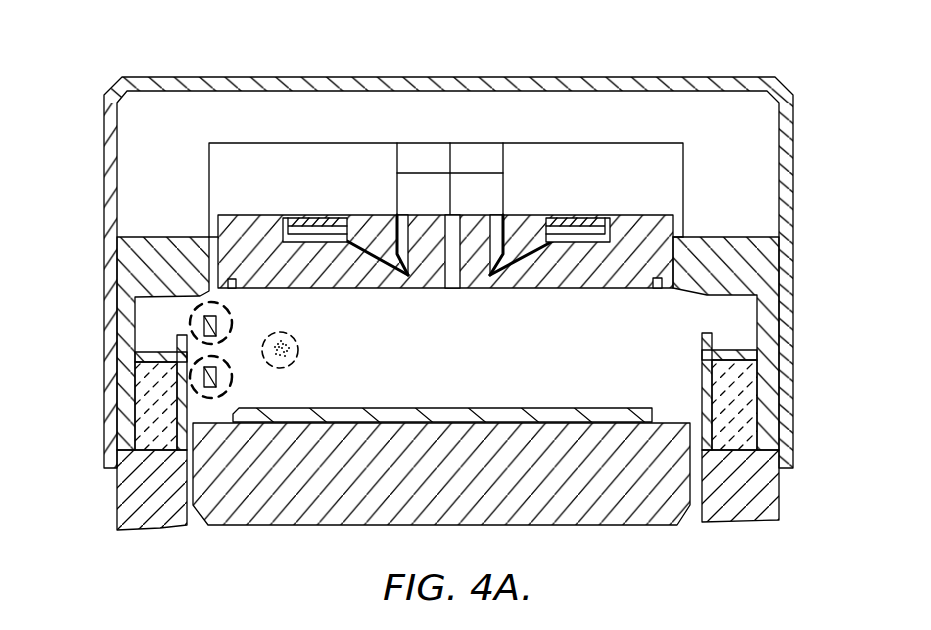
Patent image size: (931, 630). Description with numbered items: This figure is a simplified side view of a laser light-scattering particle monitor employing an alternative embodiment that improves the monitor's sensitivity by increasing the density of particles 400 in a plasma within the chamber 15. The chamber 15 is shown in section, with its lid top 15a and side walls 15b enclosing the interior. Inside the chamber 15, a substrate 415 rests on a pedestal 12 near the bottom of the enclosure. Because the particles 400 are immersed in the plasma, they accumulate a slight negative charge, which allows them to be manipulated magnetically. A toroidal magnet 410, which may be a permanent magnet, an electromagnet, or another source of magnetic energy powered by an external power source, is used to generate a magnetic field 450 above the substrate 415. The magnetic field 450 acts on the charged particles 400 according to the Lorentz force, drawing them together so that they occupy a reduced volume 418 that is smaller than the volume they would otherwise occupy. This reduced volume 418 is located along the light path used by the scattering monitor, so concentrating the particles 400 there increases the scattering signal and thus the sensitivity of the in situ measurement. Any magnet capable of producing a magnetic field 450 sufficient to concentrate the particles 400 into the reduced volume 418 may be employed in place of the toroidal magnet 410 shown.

The chamber 15 is at (522, 44).
The lid top 15a is at (585, 77).
The lid side walls 15b is at (794, 292).
The pedestal 12 is at (457, 487).
The substrate 415 is at (495, 410).
The toroidal magnet 410 is at (196, 326).
The magnetic field 450 is at (230, 314).
The reduced volume 418 is at (298, 345).
The particles 400 is at (290, 352).